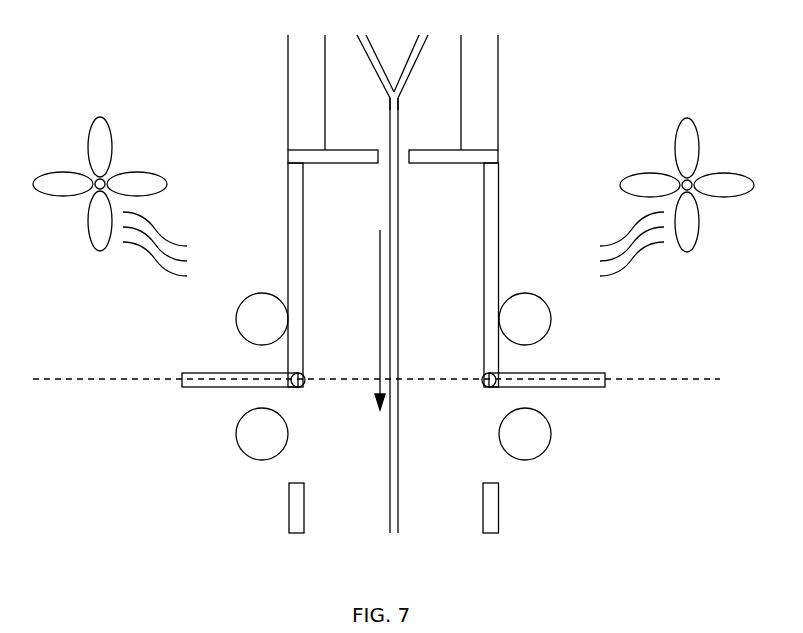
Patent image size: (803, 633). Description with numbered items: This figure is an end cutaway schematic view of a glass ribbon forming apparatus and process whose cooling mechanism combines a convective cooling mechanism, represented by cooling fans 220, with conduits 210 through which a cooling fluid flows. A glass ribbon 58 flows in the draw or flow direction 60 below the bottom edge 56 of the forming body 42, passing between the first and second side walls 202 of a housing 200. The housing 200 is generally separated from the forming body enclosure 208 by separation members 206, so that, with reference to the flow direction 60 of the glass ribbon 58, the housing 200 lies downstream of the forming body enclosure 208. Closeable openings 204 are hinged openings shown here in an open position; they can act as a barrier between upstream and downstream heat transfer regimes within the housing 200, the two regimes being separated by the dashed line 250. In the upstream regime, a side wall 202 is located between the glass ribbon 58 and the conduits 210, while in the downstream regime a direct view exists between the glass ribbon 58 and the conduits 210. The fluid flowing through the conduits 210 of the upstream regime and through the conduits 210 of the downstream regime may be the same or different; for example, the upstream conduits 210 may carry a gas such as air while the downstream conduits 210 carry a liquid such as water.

The forming body 42 is at (400, 58).
The bottom edge 56 is at (397, 100).
The glass ribbon 58 is at (400, 260).
The draw or flow direction 60 is at (380, 307).
The housing 200 is at (395, 284).
The side walls 202 is at (288, 228).
The closeable openings 204 is at (183, 379).
The separation members 206 is at (288, 155).
The forming body enclosure 208 is at (510, 118).
The conduits 210 is at (238, 322).
The cooling fans 220 is at (88, 143).
The dashed line 250 is at (90, 379).